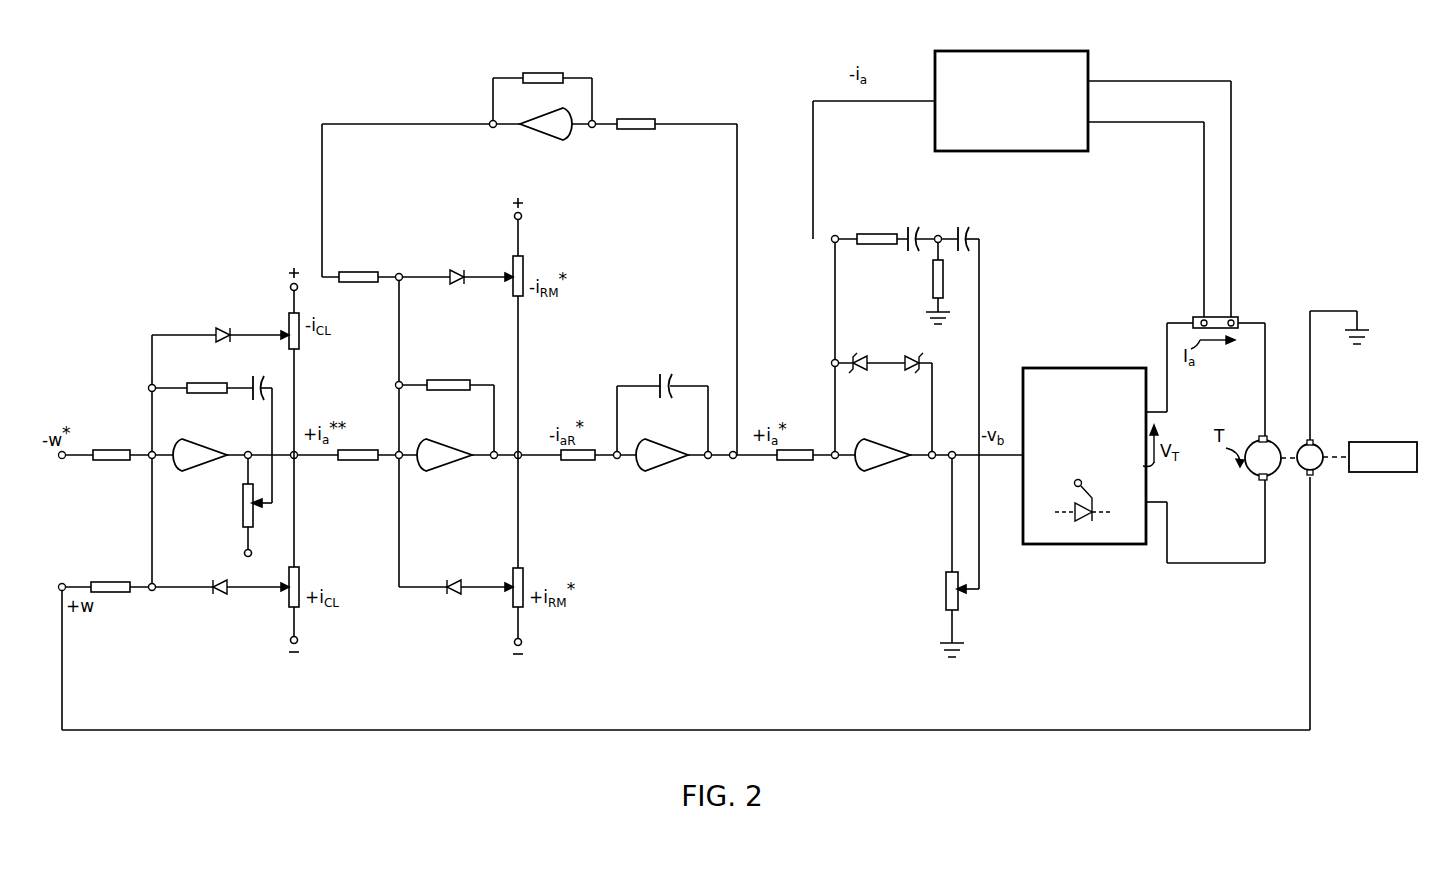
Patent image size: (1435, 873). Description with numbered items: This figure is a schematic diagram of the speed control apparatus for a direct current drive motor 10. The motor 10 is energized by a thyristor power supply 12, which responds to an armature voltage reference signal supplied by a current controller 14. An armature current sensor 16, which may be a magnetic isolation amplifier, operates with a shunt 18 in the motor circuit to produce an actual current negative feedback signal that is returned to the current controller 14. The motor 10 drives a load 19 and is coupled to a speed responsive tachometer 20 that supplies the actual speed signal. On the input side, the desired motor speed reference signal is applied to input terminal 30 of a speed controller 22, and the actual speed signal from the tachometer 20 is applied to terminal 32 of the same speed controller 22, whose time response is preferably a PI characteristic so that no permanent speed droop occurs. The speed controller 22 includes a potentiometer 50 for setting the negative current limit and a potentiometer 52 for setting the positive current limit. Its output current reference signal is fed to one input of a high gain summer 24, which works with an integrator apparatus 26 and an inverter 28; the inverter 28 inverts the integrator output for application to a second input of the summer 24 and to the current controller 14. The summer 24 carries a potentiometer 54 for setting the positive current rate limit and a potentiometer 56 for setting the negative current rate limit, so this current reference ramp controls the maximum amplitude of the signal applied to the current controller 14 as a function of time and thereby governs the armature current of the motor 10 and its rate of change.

The direct current drive motor 10 is at (1275, 471).
The thyristor power supply 12 is at (1075, 544).
The current controller 14 is at (882, 494).
The armature current sensor 16 is at (1088, 145).
The shunt 18 is at (1238, 319).
The load 19 is at (1385, 442).
The speed responsive tachometer 20 is at (1319, 468).
The speed controller 22 is at (181, 511).
The high gain summer circuit 24 is at (436, 501).
The integrator apparatus 26 is at (666, 496).
The inverter 28 is at (506, 114).
The input terminal 30 is at (62, 459).
The terminal 32 is at (62, 583).
The potentiometer 50 is at (300, 343).
The potentiometer 52 is at (299, 573).
The potentiometer 54 is at (523, 268).
The potentiometer 56 is at (523, 575).